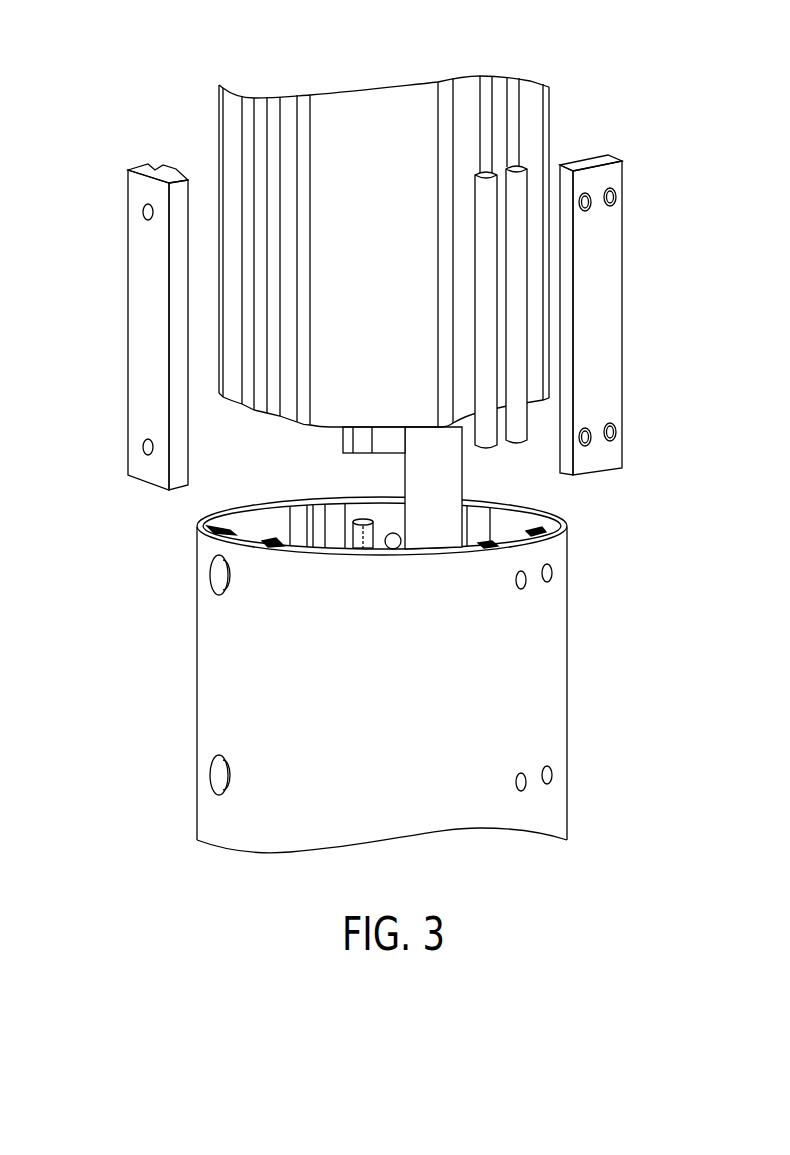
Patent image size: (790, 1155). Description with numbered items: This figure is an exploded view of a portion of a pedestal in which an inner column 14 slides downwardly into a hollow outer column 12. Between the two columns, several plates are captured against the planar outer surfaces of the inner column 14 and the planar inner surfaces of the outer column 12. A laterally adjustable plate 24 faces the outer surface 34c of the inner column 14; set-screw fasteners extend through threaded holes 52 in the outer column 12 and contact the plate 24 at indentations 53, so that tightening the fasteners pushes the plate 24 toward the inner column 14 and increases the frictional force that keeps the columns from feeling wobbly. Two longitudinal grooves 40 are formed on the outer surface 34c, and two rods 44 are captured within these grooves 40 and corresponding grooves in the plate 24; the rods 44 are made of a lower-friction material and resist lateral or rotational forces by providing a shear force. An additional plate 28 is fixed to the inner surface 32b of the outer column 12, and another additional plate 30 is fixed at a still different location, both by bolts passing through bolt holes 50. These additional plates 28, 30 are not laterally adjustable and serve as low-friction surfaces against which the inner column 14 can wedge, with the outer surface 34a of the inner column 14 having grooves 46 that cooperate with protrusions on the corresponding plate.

The outer column 12 is at (568, 718).
The inner column 14 is at (219, 118).
The plate 24 is at (612, 370).
The additional plate 28 is at (342, 437).
The additional plate 30 is at (128, 424).
The inner surface 32b is at (362, 516).
The outer surface 34a is at (235, 157).
The outer surface 34c is at (535, 140).
The grooves 40 is at (480, 107).
The rods 44 is at (498, 446).
The grooves 46 is at (255, 107).
The bolt holes 50 is at (210, 574).
The threaded holes 52 is at (526, 583).
The indentations 53 is at (591, 205).